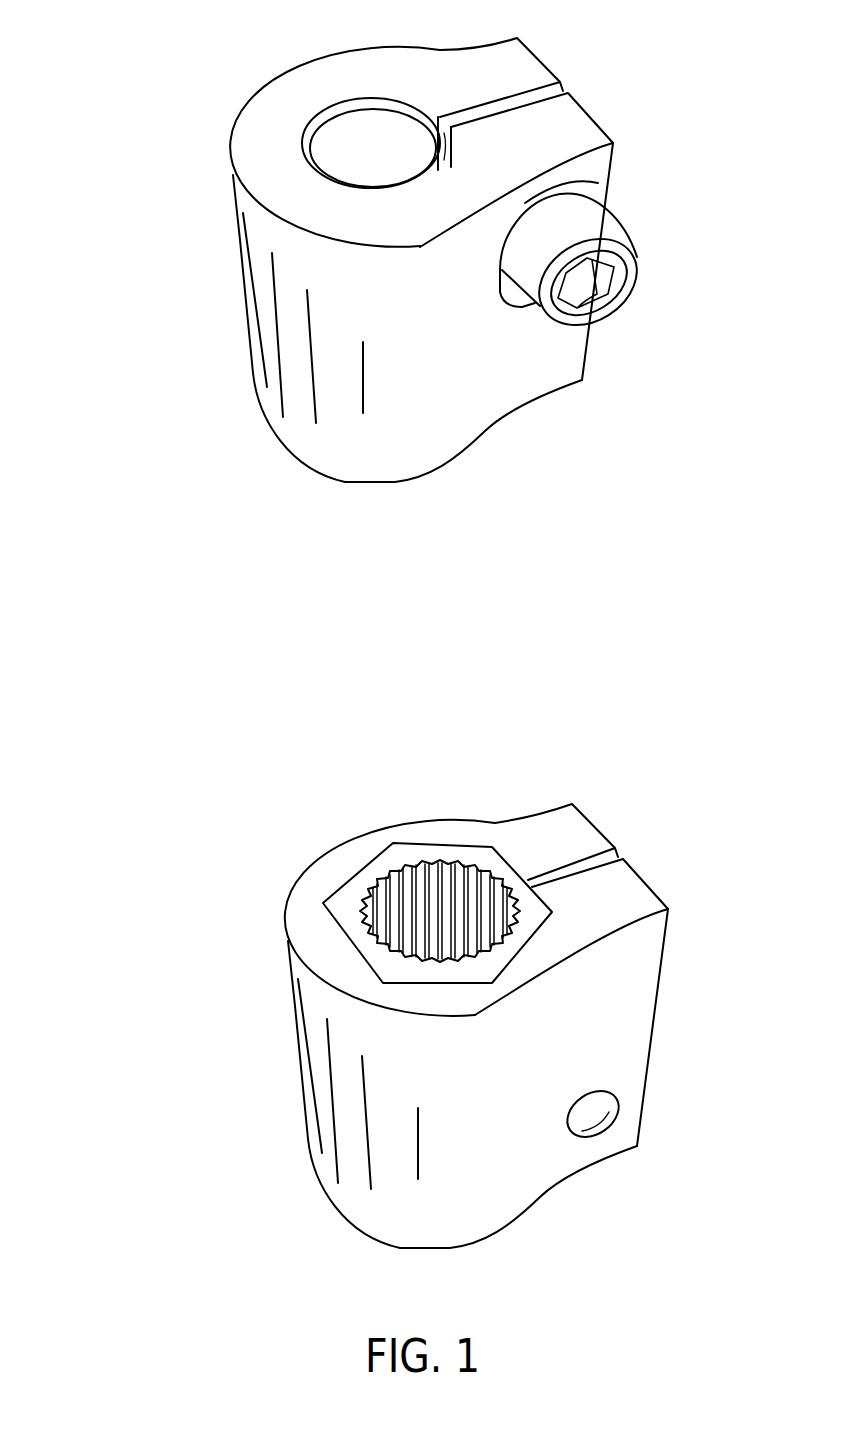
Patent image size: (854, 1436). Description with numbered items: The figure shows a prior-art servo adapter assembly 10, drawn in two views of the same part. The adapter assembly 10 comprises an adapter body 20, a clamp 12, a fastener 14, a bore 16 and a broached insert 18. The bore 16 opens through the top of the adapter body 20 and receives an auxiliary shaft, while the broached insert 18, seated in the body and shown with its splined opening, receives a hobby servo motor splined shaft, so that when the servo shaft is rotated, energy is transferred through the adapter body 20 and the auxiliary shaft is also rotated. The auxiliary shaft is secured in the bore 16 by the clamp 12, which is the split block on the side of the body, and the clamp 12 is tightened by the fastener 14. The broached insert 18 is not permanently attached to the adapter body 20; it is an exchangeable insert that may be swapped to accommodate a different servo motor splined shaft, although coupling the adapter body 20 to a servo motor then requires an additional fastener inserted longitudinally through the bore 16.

The adapter assembly 10 is at (246, 431).
The clamp 12 is at (537, 53).
The fastener 14 is at (595, 230).
The bore 16 is at (363, 128).
The broached insert 18 is at (407, 858).
The adapter body 20 is at (478, 425).